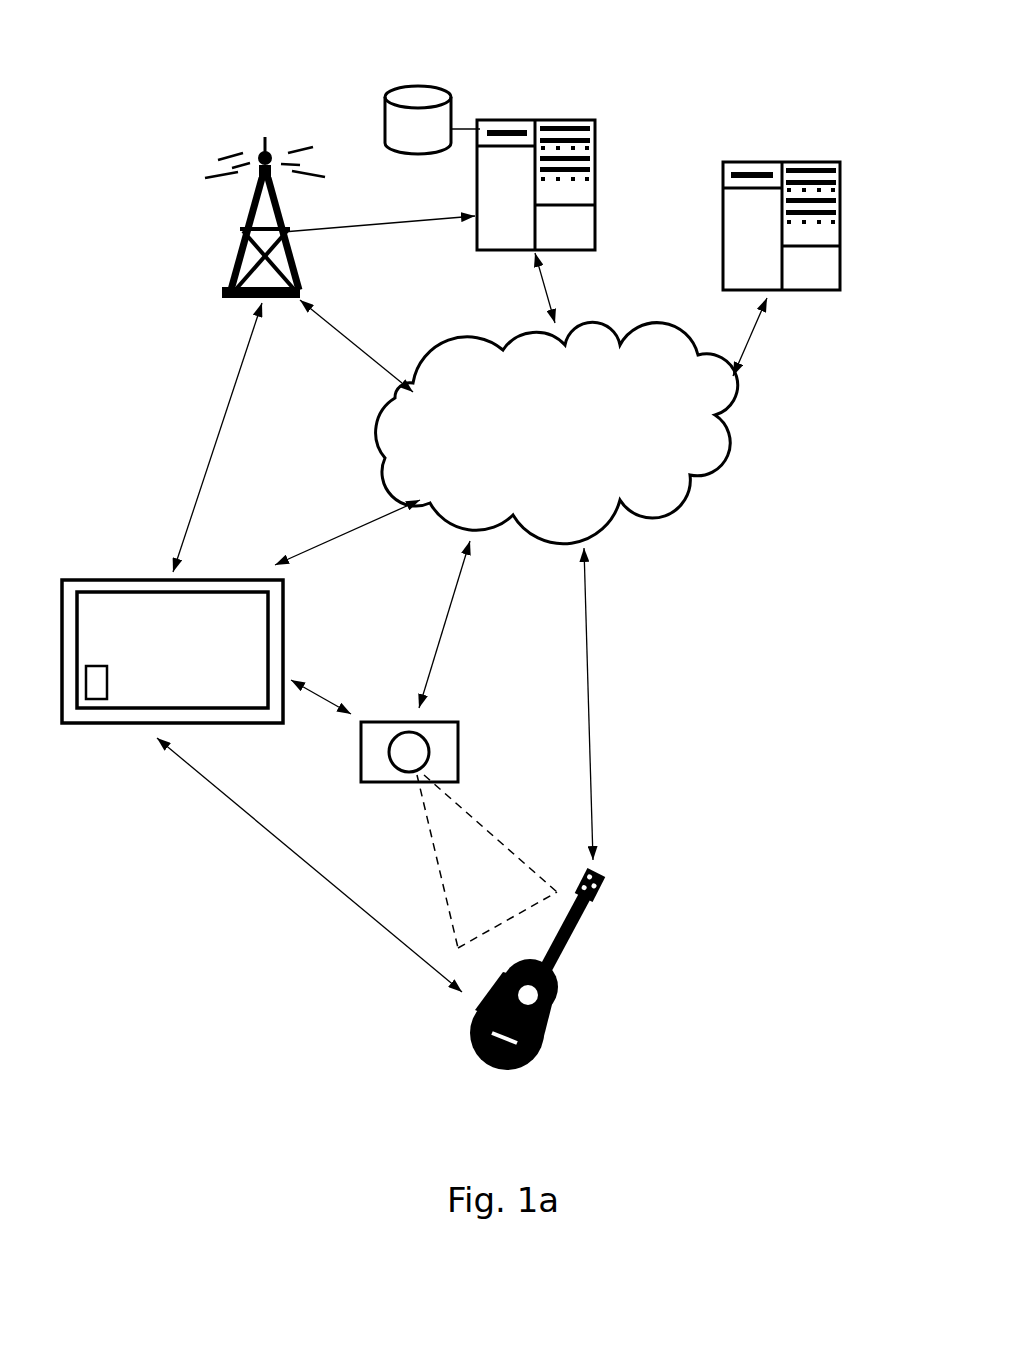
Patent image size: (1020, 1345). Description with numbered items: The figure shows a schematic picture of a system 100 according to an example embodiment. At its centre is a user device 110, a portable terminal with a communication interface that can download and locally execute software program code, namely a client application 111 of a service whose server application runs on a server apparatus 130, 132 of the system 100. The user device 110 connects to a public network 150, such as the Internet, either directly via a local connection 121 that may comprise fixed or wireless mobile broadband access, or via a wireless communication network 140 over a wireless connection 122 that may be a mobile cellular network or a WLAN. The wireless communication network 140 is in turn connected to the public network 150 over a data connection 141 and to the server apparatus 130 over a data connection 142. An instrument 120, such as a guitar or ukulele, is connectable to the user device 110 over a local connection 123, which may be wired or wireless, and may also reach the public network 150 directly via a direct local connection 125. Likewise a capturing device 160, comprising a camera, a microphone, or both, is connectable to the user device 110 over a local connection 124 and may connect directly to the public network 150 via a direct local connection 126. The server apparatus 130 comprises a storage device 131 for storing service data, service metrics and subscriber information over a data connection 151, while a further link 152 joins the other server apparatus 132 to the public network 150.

The system 100 is at (172, 87).
The user device 110 is at (92, 722).
The client application 111 is at (108, 682).
The instrument 120 is at (562, 1005).
The local connection 121 is at (372, 521).
The wireless connection 122 is at (216, 430).
The local connection 123 is at (318, 875).
The local connection 124 is at (334, 695).
The direct local connection 125 is at (593, 762).
The direct local connection 126 is at (450, 617).
The server apparatus 130 is at (570, 120).
The storage device 131 is at (422, 84).
The server apparatus 132 is at (775, 162).
The wireless communication network 140 is at (257, 212).
The data connection 141 is at (356, 343).
The data connection 142 is at (395, 222).
The public network 150 is at (589, 452).
The data connection 151 is at (549, 300).
The communication link 152 is at (742, 365).
The capturing device 160 is at (458, 750).